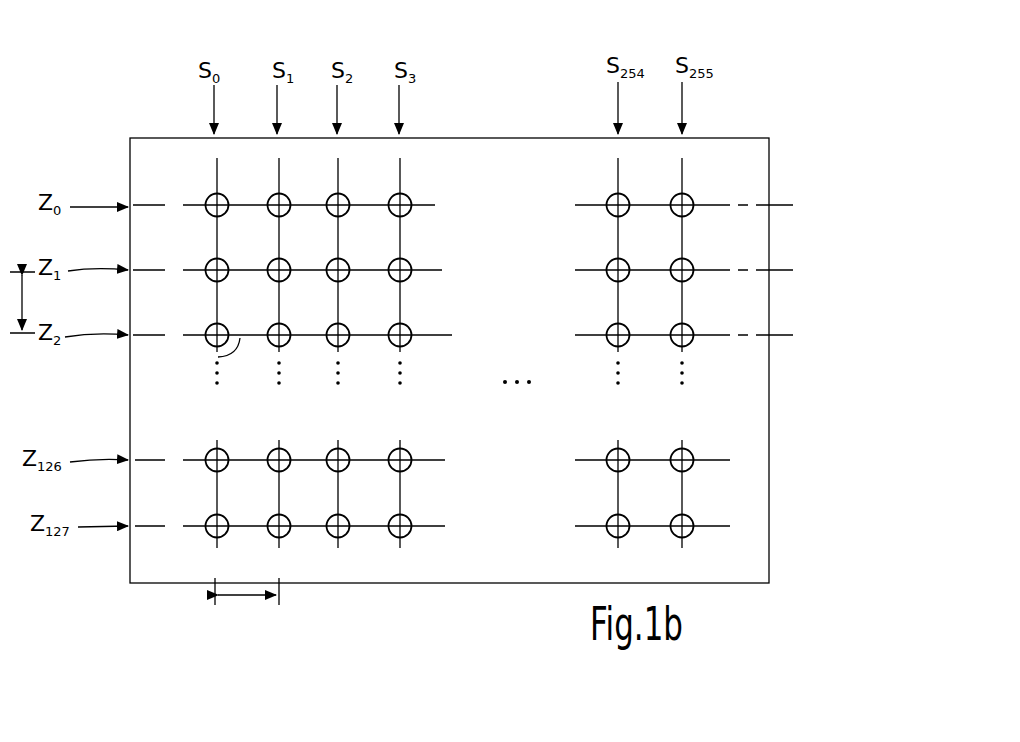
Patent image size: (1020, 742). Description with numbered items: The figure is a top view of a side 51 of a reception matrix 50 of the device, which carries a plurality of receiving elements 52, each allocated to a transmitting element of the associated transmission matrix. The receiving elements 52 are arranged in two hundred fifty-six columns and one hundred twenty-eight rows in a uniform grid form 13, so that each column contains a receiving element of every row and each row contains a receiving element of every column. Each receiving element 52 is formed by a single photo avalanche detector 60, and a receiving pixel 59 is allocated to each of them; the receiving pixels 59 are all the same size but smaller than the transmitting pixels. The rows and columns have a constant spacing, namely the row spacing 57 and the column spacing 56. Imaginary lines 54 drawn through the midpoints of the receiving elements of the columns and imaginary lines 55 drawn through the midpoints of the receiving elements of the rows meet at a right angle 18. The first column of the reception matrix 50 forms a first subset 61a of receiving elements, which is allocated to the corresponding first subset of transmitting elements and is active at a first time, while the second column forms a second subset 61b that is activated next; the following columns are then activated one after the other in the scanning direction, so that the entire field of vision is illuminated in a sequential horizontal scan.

The uniform grid form 13 is at (748, 153).
The right angle 18 is at (240, 338).
The reception matrix 50 is at (782, 418).
The side 51 is at (757, 487).
The receiving element 52 is at (686, 515).
The imaginary line through column midpoints 54 is at (215, 172).
The imaginary line through row midpoints 55 is at (782, 206).
The column spacing 56 is at (239, 600).
The row spacing 57 is at (22, 301).
The receiving pixel 59 is at (609, 343).
The single photo avalanche detector 60 is at (346, 342).
The first subset of receiving elements 61a is at (200, 133).
The second subset of receiving elements 61b is at (268, 133).